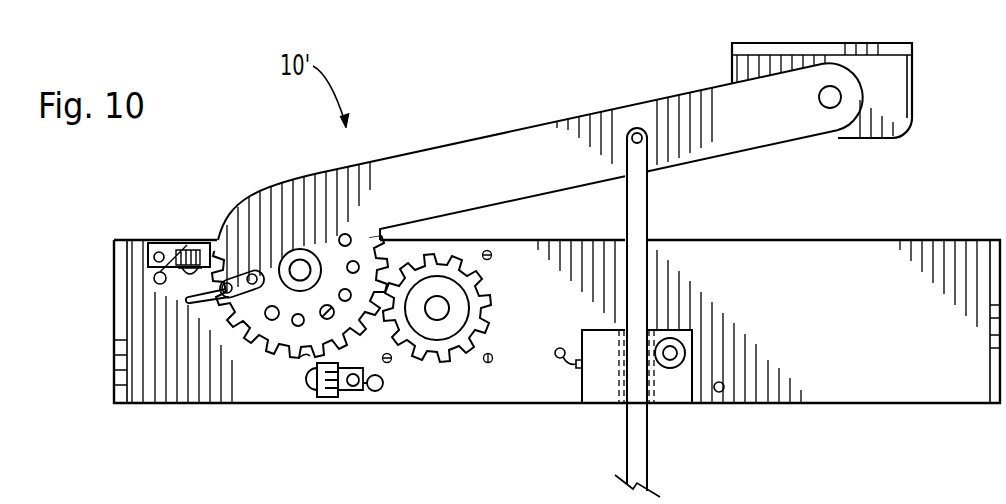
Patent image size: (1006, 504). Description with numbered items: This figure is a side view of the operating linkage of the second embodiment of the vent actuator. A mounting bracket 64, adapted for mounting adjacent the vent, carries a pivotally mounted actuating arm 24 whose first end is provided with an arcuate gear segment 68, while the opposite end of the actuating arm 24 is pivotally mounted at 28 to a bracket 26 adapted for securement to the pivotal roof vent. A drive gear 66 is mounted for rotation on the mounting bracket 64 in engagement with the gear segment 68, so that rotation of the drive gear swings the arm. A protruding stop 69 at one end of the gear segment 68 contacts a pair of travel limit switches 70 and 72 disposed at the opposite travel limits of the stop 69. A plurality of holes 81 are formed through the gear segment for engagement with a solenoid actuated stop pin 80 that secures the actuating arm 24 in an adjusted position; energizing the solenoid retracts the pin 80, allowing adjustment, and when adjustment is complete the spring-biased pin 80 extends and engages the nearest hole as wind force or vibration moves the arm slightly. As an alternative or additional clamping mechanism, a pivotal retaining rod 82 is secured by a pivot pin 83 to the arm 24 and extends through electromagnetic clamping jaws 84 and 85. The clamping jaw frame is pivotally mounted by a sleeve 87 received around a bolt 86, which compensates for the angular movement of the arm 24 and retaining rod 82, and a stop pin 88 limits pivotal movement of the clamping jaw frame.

The actuating arm 24 is at (477, 142).
The bracket 26 is at (732, 72).
The pivotal mounting 28 is at (831, 103).
The mounting bracket 64 is at (948, 240).
The drive gear 66 is at (466, 308).
The arcuate gear segment 68 is at (325, 320).
The protruding stop 69 is at (186, 293).
The travel limit switch 70 is at (338, 396).
The travel limit switch 72 is at (176, 250).
The solenoid actuated stop pin 80 is at (306, 360).
The holes 81 is at (348, 238).
The pivotal retaining rod 82 is at (648, 214).
The pivot pin 83 is at (642, 135).
The electromagnetic clamping jaw 84 is at (671, 395).
The electromagnetic clamping jaw 85 is at (607, 395).
The bolt 86 is at (671, 350).
The sleeve 87 is at (688, 354).
The stop pin 88 is at (724, 385).